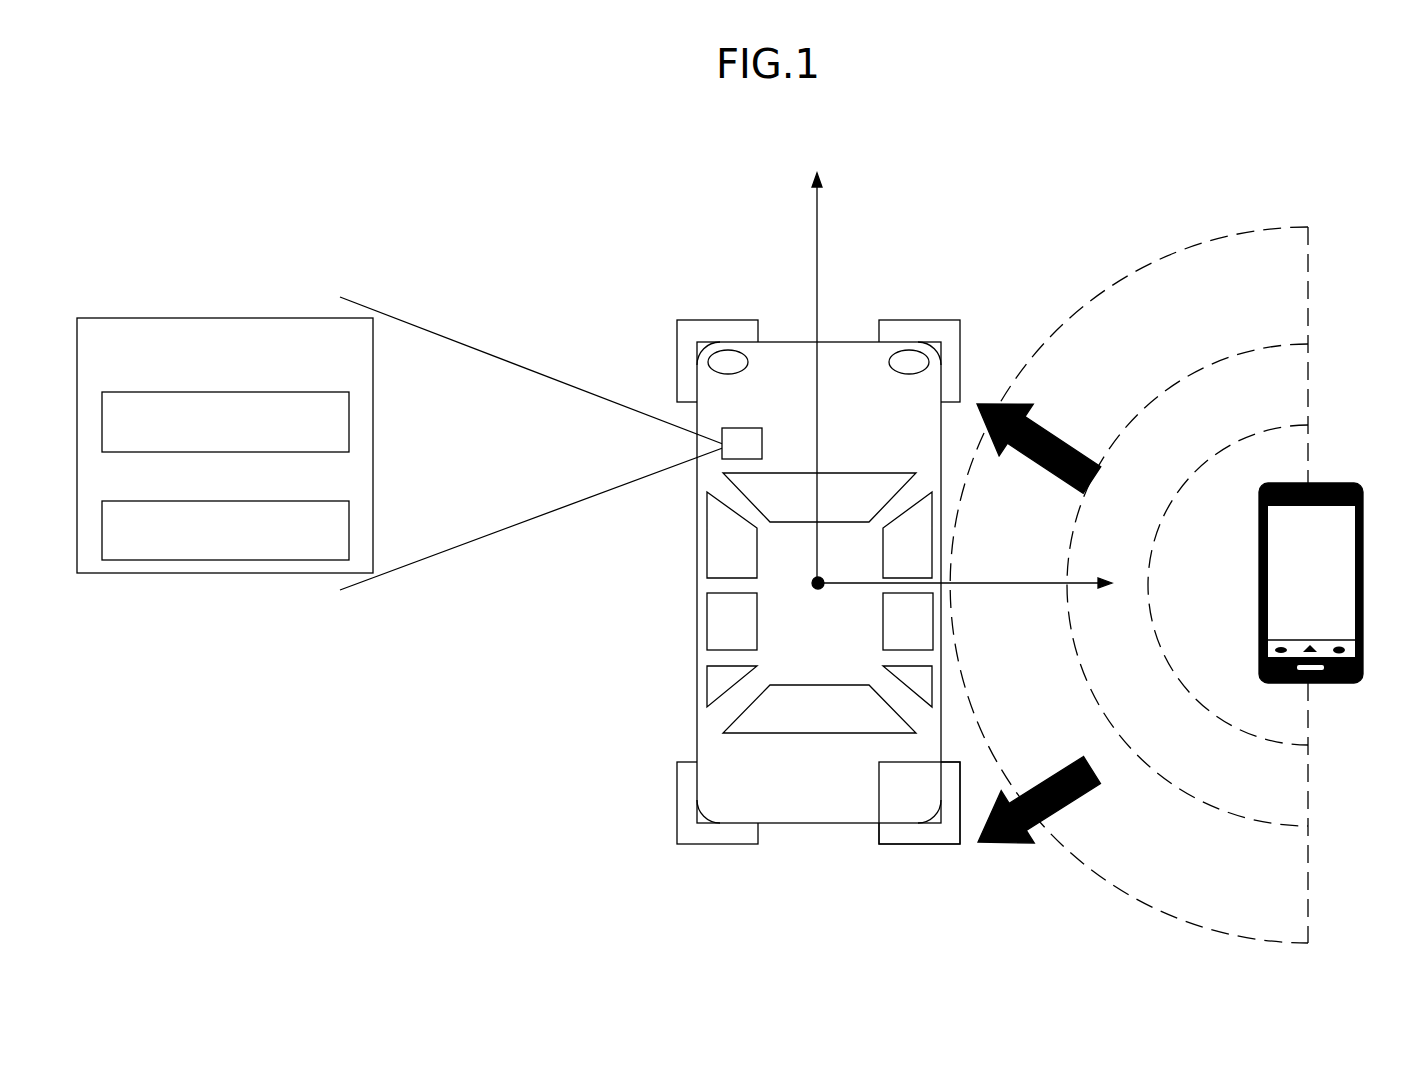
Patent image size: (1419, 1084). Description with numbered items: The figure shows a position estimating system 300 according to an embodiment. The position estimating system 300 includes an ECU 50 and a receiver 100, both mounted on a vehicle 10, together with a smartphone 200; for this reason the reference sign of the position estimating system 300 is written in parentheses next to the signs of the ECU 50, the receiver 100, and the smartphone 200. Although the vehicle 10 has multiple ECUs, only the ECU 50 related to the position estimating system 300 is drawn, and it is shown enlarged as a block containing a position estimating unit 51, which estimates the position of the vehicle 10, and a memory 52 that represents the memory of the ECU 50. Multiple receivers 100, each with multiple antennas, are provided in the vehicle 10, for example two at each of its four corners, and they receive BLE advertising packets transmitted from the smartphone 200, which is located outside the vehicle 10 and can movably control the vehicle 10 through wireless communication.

The vehicle 10 is at (820, 827).
The ECU 50 is at (438, 418).
The position estimating unit 51 is at (290, 392).
The memory 52 is at (290, 501).
The receiver 100 is at (918, 844).
The smartphone 200 is at (1342, 483).
The position estimating system 300 is at (748, 543).